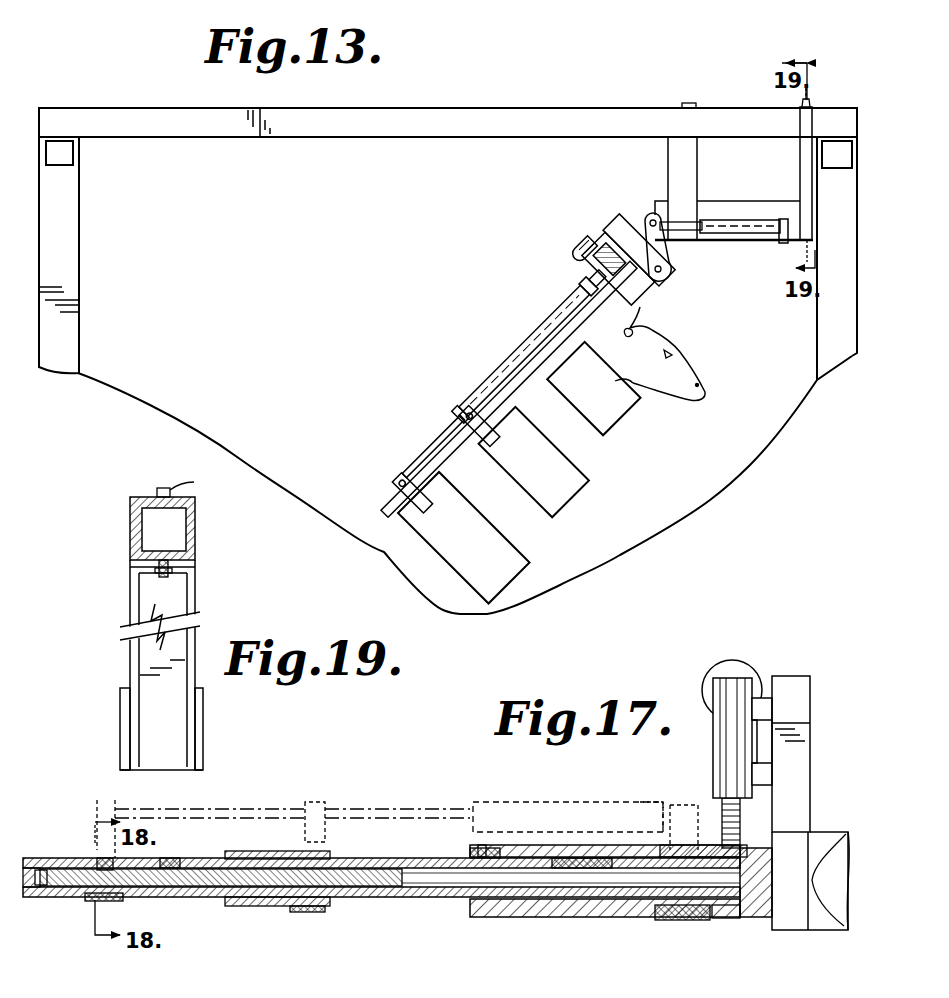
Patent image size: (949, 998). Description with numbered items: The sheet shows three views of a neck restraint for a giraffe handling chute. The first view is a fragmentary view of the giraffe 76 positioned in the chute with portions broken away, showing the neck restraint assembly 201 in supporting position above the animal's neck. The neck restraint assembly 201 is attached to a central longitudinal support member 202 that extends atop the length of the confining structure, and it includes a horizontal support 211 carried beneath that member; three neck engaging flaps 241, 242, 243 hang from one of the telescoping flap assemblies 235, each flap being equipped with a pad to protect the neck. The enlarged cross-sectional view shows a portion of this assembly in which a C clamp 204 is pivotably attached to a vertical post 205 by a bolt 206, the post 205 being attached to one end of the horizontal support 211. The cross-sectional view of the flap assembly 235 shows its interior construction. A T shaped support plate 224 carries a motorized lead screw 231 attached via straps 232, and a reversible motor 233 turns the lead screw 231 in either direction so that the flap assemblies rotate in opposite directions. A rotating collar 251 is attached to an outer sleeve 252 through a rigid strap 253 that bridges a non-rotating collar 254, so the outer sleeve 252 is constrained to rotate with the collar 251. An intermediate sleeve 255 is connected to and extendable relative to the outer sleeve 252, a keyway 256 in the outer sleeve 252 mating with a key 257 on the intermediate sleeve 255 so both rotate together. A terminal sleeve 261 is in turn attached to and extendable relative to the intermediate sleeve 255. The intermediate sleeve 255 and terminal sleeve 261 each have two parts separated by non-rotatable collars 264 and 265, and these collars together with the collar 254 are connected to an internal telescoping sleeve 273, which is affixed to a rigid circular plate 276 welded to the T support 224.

In FIG. 13, the animal 76 is at (692, 357).
In FIG. 13, the neck restraint assembly 201 is at (632, 194).
In FIG. 13, the central longitudinal support member 202 is at (510, 118).
In FIG. 13, the horizontal support 211 is at (760, 207).
In FIG. 13, the neck engaging flap 241 is at (464, 538).
In FIG. 13, the neck engaging flap 242 is at (534, 462).
In FIG. 13, the neck engaging flap 243 is at (593, 388).
In FIG. 19, the C clamp 204 is at (130, 532).
In FIG. 19, the vertical post 205 is at (135, 612).
In FIG. 19, the bolt 206 is at (170, 578).
In FIG. 17, the T shaped support plate 224 is at (799, 917).
In FIG. 17, the motorized lead screw 231 is at (742, 822).
In FIG. 17, the straps 232 is at (762, 708).
In FIG. 17, the reversible motor 233 is at (761, 690).
In FIG. 17, the telescoping flap assembly 235 is at (675, 930).
In FIG. 17, the rotating collar 251 is at (730, 920).
In FIG. 17, the outer sleeve 252 is at (596, 918).
In FIG. 17, the rigid strap 253 is at (660, 918).
In FIG. 17, the non-rotating collar 254 is at (715, 853).
In FIG. 17, the intermediate sleeve 255 is at (435, 900).
In FIG. 17, the keyway 256 is at (483, 848).
In FIG. 17, the key 257 is at (475, 848).
In FIG. 17, the terminal sleeve 261 is at (163, 900).
In FIG. 17, the non-rotatable collar 264 is at (320, 912).
In FIG. 17, the non-rotatable collar 265 is at (92, 900).
In FIG. 17, the internal telescoping sleeve 273 is at (216, 880).
In FIG. 17, the rigid circular plate 276 is at (757, 920).